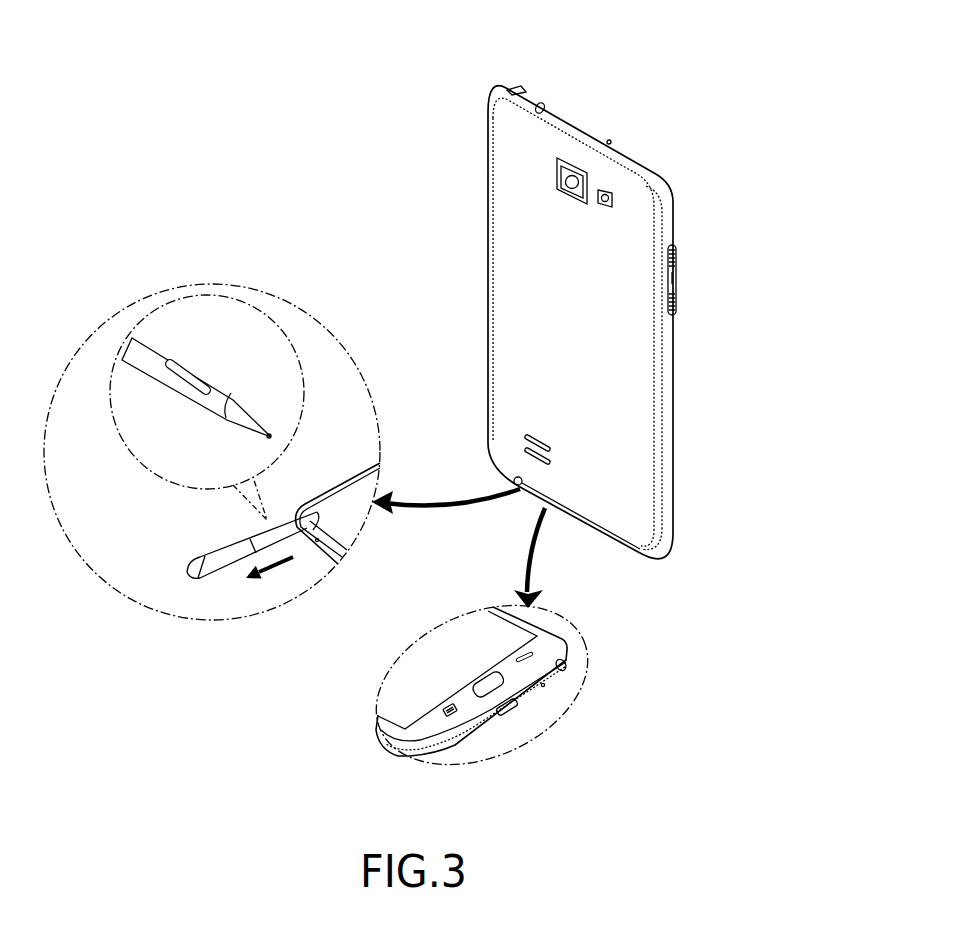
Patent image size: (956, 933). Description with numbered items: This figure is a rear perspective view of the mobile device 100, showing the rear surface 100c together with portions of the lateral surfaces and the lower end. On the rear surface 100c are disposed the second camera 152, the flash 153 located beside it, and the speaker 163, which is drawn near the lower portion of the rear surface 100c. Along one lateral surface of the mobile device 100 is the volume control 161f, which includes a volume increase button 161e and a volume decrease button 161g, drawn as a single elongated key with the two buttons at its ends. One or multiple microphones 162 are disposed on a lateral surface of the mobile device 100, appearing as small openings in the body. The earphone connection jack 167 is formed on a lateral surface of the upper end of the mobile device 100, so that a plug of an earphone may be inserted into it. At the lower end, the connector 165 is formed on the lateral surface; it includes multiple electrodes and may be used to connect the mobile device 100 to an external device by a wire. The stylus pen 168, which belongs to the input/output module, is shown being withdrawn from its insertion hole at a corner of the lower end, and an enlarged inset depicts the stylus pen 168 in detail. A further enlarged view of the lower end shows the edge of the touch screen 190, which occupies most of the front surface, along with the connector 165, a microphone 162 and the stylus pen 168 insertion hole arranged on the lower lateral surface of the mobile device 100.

The mobile device 100 is at (487, 60).
The rear surface 100c is at (507, 308).
The second camera 152 is at (556, 174).
The flash 153 is at (614, 203).
The volume increase button 161e is at (693, 246).
The volume control 161f is at (676, 267).
The volume decrease button 161g is at (676, 292).
The microphone 162 is at (611, 140).
The speaker 163 is at (525, 434).
The connector 165 is at (507, 710).
The earphone connection jack 167 is at (542, 104).
The stylus pen 168 is at (516, 476).
The touch screen 190 is at (418, 660).